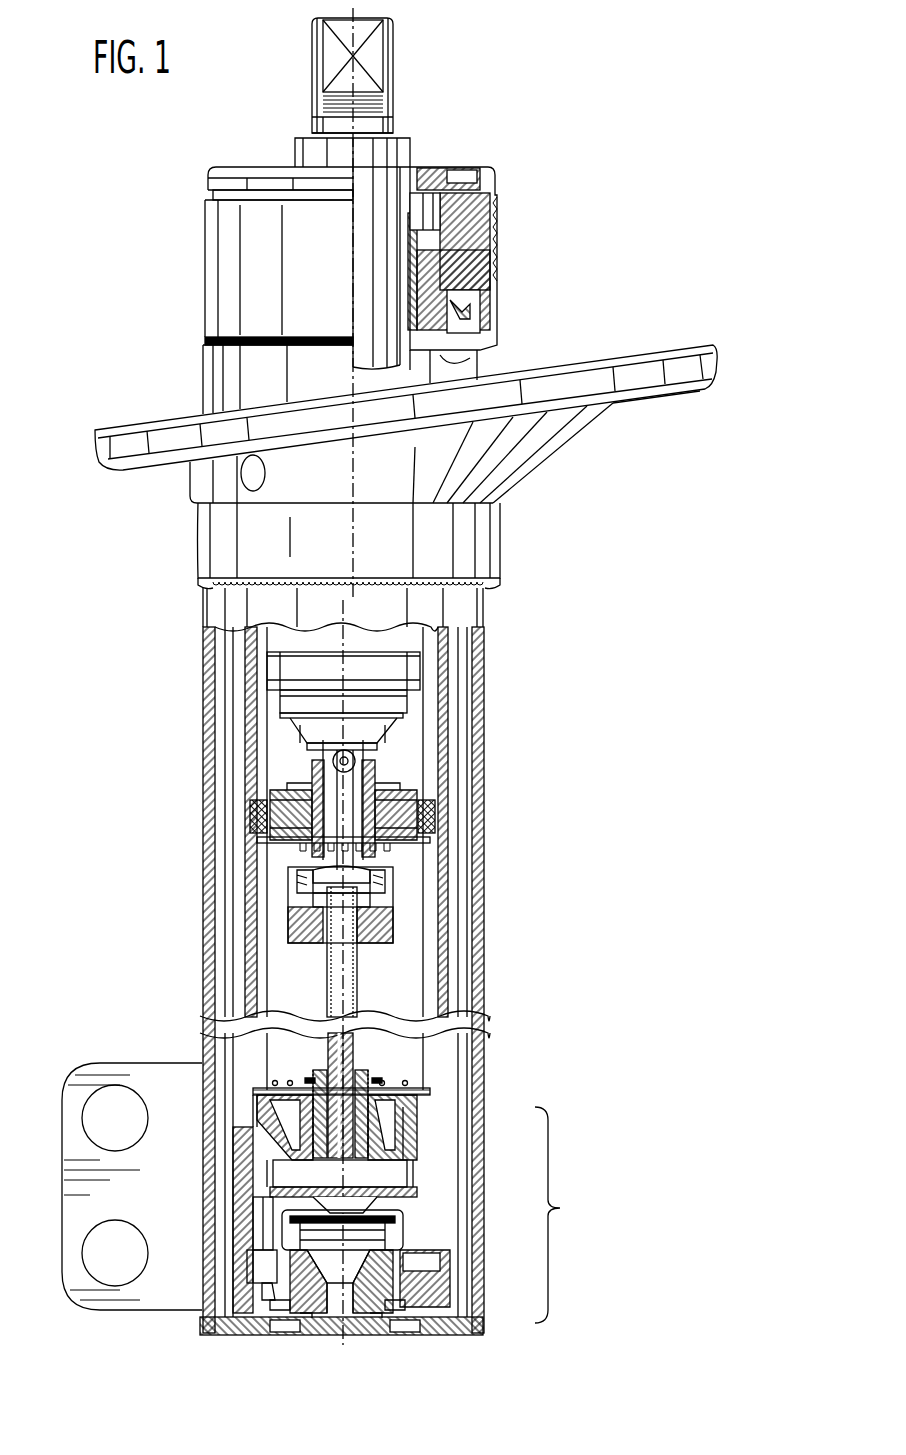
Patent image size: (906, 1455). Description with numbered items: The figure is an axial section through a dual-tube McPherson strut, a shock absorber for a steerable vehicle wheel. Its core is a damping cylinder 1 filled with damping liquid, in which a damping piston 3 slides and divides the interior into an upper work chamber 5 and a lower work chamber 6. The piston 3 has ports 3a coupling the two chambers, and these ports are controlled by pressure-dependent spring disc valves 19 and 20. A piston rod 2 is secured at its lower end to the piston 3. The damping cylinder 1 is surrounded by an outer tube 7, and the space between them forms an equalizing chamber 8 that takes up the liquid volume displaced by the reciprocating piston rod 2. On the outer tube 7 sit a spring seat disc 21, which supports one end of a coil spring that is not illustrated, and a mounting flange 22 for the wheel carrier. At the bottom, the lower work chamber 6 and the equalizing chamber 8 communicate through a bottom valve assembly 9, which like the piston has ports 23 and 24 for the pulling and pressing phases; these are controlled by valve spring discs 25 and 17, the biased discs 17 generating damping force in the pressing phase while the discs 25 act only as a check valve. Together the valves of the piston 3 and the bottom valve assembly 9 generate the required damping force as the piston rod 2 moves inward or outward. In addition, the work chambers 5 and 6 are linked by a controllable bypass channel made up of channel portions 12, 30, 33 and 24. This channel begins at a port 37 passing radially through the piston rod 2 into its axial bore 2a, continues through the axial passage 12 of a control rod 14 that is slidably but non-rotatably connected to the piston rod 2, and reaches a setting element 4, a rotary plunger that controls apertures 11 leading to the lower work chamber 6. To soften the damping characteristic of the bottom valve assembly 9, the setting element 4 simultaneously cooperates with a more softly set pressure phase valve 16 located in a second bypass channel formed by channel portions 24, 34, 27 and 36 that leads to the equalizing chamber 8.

The damping cylinder 1 is at (443, 688).
The piston rod 2 is at (378, 150).
The axial bore 2a is at (378, 803).
The damping piston 3 is at (400, 806).
The ports 3a is at (257, 813).
The setting element 4 is at (440, 1163).
The work chamber 5 is at (413, 631).
The work chamber 6 is at (417, 873).
The outer tube 7 is at (482, 722).
The equalizing chamber 8 is at (463, 653).
The bottom valve assembly 9 is at (560, 1208).
The apertures 11 is at (260, 1120).
The axial passage 12 is at (348, 966).
The control rod 14 is at (350, 1024).
The pressure phase valve 16 is at (287, 1200).
The valve spring discs 17 is at (271, 1312).
The spring disc valve 19 is at (355, 762).
The spring disc valve 20 is at (297, 855).
The spring seat disc 21 is at (565, 382).
The mounting flange 22 is at (88, 1198).
The port 23 is at (437, 1103).
The port 24 is at (260, 1140).
The valve spring discs 25 is at (258, 1086).
The channel portion 27 is at (377, 1240).
The channel portion 30 is at (400, 1177).
The channel portion 33 is at (273, 1173).
The channel portion 34 is at (280, 1222).
The channel portion 36 is at (350, 1293).
The port 37 is at (330, 750).